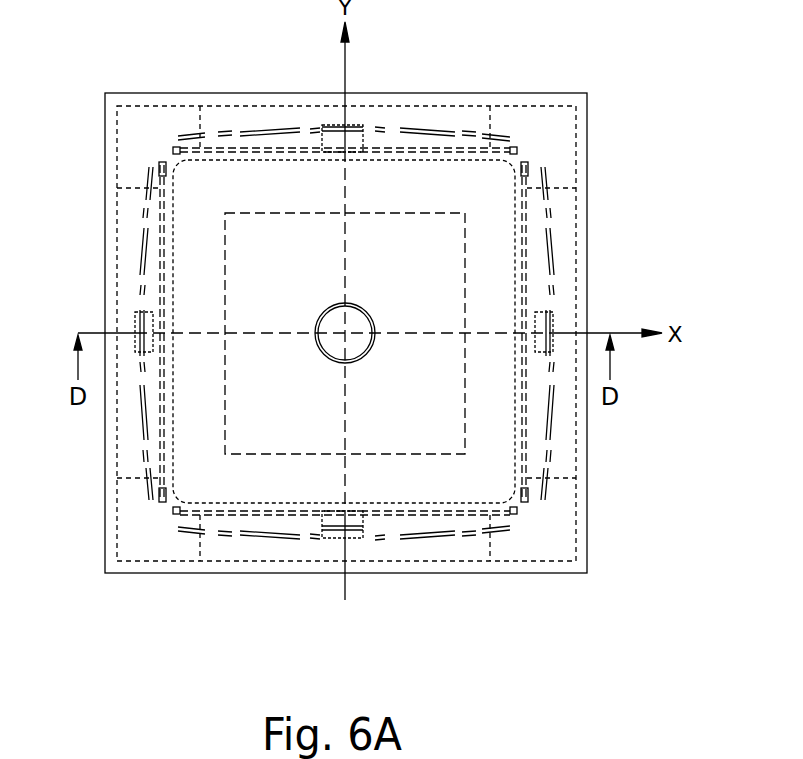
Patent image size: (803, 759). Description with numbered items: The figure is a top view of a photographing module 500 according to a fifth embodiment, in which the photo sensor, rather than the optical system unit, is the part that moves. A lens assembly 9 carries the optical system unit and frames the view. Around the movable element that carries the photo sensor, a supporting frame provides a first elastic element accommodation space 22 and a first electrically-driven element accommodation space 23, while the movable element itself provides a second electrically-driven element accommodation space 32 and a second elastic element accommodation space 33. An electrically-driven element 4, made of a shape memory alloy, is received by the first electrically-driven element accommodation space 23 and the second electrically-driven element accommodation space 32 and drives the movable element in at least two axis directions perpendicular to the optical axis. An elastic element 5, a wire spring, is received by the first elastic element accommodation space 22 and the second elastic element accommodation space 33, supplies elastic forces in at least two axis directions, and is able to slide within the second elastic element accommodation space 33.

The photographing module 500 is at (688, 58).
The lens assembly 9 is at (580, 287).
The elastic element 5 is at (292, 150).
The electrically-driven element 4 is at (143, 238).
The first elastic element accommodation space 22 is at (173, 148).
The first electrically-driven element accommodation space 23 is at (147, 177).
The second electrically-driven element accommodation space 32 is at (135, 325).
The second elastic element accommodation space 33 is at (358, 152).